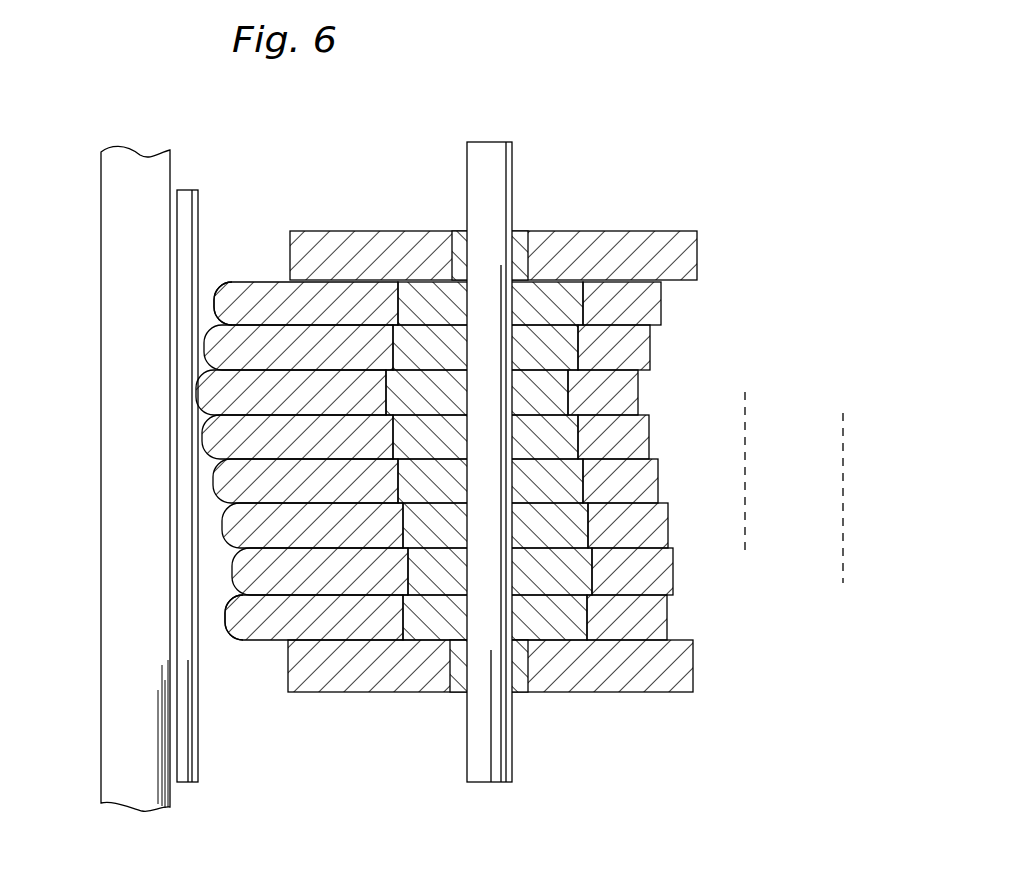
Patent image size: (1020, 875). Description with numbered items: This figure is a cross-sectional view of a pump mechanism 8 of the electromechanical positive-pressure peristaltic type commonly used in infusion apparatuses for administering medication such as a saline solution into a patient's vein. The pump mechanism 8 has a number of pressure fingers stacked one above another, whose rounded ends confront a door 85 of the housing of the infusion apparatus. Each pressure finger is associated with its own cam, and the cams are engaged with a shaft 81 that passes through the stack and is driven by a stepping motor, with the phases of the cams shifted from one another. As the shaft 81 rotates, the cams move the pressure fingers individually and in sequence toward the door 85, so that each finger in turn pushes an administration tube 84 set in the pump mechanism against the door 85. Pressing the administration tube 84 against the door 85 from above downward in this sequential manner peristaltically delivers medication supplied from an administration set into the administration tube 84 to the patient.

The pump mechanism 8 is at (608, 200).
The shaft 81 is at (475, 160).
The administration tube 84 is at (187, 196).
The door 85 is at (108, 737).